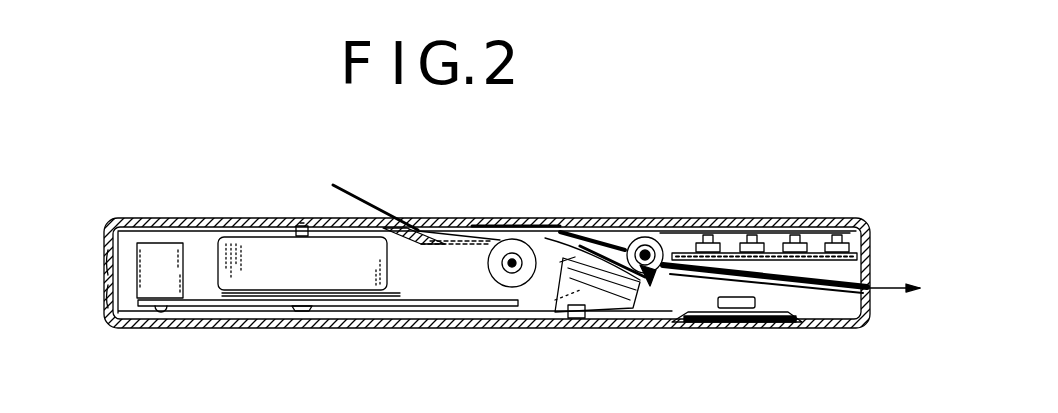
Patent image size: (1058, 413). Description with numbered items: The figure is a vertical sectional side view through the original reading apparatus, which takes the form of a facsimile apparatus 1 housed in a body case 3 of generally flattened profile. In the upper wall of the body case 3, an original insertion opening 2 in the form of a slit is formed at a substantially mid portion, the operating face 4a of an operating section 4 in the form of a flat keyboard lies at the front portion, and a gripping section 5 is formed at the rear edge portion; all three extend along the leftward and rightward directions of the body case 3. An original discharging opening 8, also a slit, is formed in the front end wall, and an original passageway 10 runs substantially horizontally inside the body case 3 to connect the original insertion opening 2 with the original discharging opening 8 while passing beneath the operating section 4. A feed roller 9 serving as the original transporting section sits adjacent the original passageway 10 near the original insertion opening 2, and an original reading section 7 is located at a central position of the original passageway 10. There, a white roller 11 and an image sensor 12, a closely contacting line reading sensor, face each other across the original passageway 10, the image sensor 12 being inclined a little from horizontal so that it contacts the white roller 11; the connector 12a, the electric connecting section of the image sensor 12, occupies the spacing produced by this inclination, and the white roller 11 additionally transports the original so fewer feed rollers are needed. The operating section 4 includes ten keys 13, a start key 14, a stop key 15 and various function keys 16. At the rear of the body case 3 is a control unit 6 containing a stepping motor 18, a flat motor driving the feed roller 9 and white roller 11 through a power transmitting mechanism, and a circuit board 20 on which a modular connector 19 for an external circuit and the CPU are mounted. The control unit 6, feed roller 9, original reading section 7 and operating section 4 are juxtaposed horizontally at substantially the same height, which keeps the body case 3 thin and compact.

The facsimile apparatus 1 is at (859, 204).
The original insertion opening 2 is at (436, 222).
The body case 3 is at (326, 222).
The operating section 4 is at (725, 232).
The operating face 4a is at (772, 228).
The gripping section 5 is at (133, 217).
The control unit 6 is at (254, 247).
The original reading section 7 is at (600, 228).
The original discharging opening 8 is at (872, 283).
The feed roller 9 is at (514, 238).
The original passageway 10 is at (806, 294).
The white roller 11 is at (650, 232).
The image sensor 12 is at (633, 307).
The connector 12a is at (568, 318).
The ten keys 13 is at (835, 232).
The start key 14 is at (752, 243).
The stop key 15 is at (795, 243).
The function keys 16 is at (837, 243).
The stepping motor 18 is at (372, 296).
The modular connector 19 is at (167, 247).
The circuit board 20 is at (247, 307).